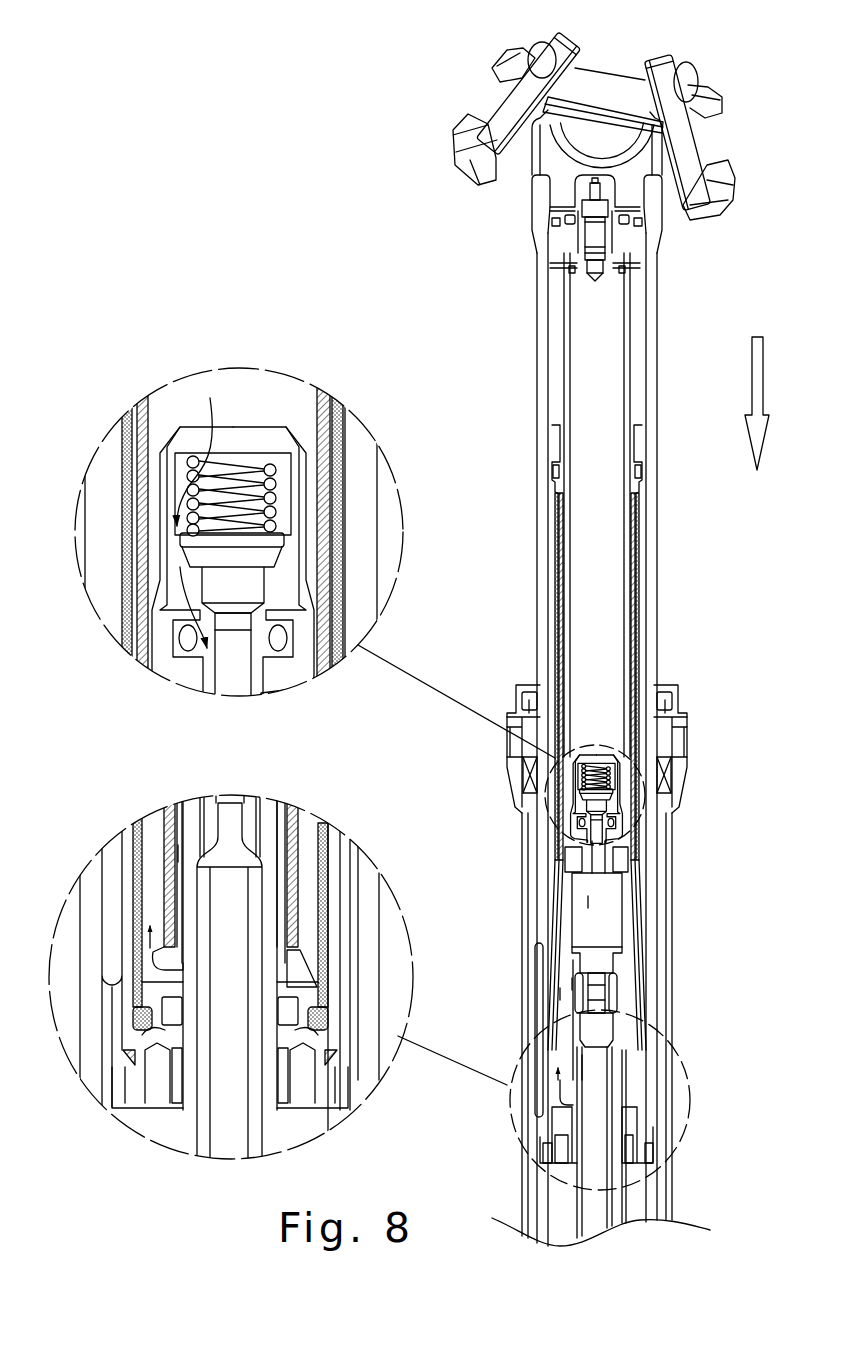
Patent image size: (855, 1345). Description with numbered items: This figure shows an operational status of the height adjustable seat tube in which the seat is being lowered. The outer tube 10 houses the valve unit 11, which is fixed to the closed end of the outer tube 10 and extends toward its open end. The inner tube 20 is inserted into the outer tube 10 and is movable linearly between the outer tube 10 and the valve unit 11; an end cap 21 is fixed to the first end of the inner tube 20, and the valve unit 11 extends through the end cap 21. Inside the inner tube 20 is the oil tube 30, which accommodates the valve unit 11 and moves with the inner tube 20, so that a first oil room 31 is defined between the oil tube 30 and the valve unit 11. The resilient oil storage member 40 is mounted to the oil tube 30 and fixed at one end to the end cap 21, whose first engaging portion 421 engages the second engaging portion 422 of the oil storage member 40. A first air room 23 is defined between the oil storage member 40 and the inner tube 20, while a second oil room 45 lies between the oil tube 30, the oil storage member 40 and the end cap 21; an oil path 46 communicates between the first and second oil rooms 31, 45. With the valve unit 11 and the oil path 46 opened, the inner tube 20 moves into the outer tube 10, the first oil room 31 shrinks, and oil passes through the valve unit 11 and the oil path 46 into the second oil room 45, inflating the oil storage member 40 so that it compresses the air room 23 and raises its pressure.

The outer tube 10 is at (676, 1015).
The valve unit 11 is at (277, 440).
The inner tube 20 is at (661, 326).
The end cap 21 is at (135, 1095).
The first air room 23 is at (557, 323).
The oil tube 30 is at (630, 650).
The first oil room 31 is at (587, 402).
The oil storage member 40 is at (636, 540).
The second oil room 45 is at (560, 975).
The oil path 46 is at (150, 958).
The first engaging portion 421 is at (142, 1040).
The second engaging portion 422 is at (140, 1012).